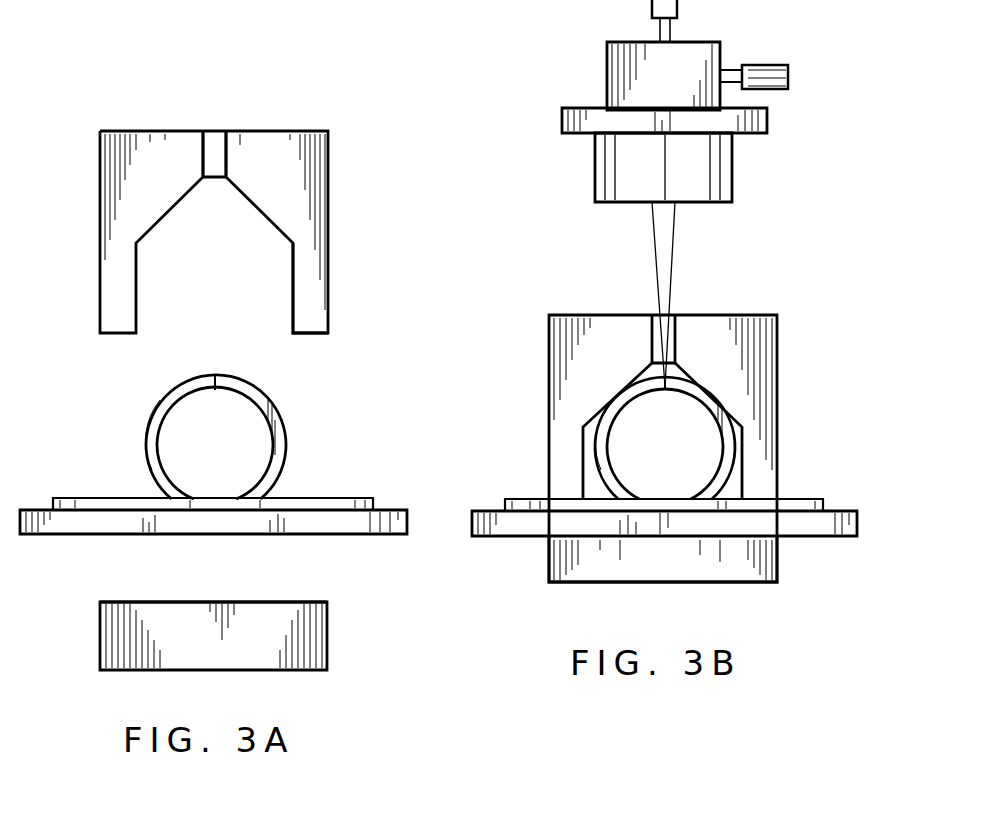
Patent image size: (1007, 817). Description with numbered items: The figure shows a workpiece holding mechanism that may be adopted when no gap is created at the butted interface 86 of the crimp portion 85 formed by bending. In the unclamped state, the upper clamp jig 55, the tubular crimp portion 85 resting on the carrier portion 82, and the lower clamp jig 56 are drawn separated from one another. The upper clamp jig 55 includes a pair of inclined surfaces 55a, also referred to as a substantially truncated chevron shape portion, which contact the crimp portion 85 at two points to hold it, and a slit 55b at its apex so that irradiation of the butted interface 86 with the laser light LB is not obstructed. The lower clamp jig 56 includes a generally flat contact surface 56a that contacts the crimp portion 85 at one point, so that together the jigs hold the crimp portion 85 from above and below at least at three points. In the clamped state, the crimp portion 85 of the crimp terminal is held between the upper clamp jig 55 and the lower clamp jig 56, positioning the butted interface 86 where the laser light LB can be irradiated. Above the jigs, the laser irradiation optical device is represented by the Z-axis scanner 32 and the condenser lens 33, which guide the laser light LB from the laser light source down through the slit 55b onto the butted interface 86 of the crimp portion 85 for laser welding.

In FIG. 3B, the Z-axis scanner 32 is at (607, 75).
In FIG. 3B, the condenser lens 33 is at (733, 180).
In FIG. 3B, the laser light LB is at (673, 245).
In FIG. 3A, the upper clamp jig 55 is at (282, 130).
In FIG. 3B, the upper clamp jig 55 is at (778, 382).
In FIG. 3A, the inclined surfaces 55a is at (292, 283).
In FIG. 3A, the slit 55b is at (216, 140).
In FIG. 3B, the slit 55b is at (670, 348).
In FIG. 3A, the lower clamp jig 56 is at (328, 632).
In FIG. 3B, the lower clamp jig 56 is at (778, 562).
In FIG. 3A, the contact surface 56a is at (237, 612).
In FIG. 3A, the carrier portion 82 is at (135, 498).
In FIG. 3B, the carrier portion 82 is at (808, 498).
In FIG. 3A, the crimp portion 85 is at (262, 392).
In FIG. 3B, the crimp portion 85 is at (595, 468).
In FIG. 3A, the seam of ring member 86 is at (180, 385).
In FIG. 3B, the seam of ring member 86 is at (643, 382).